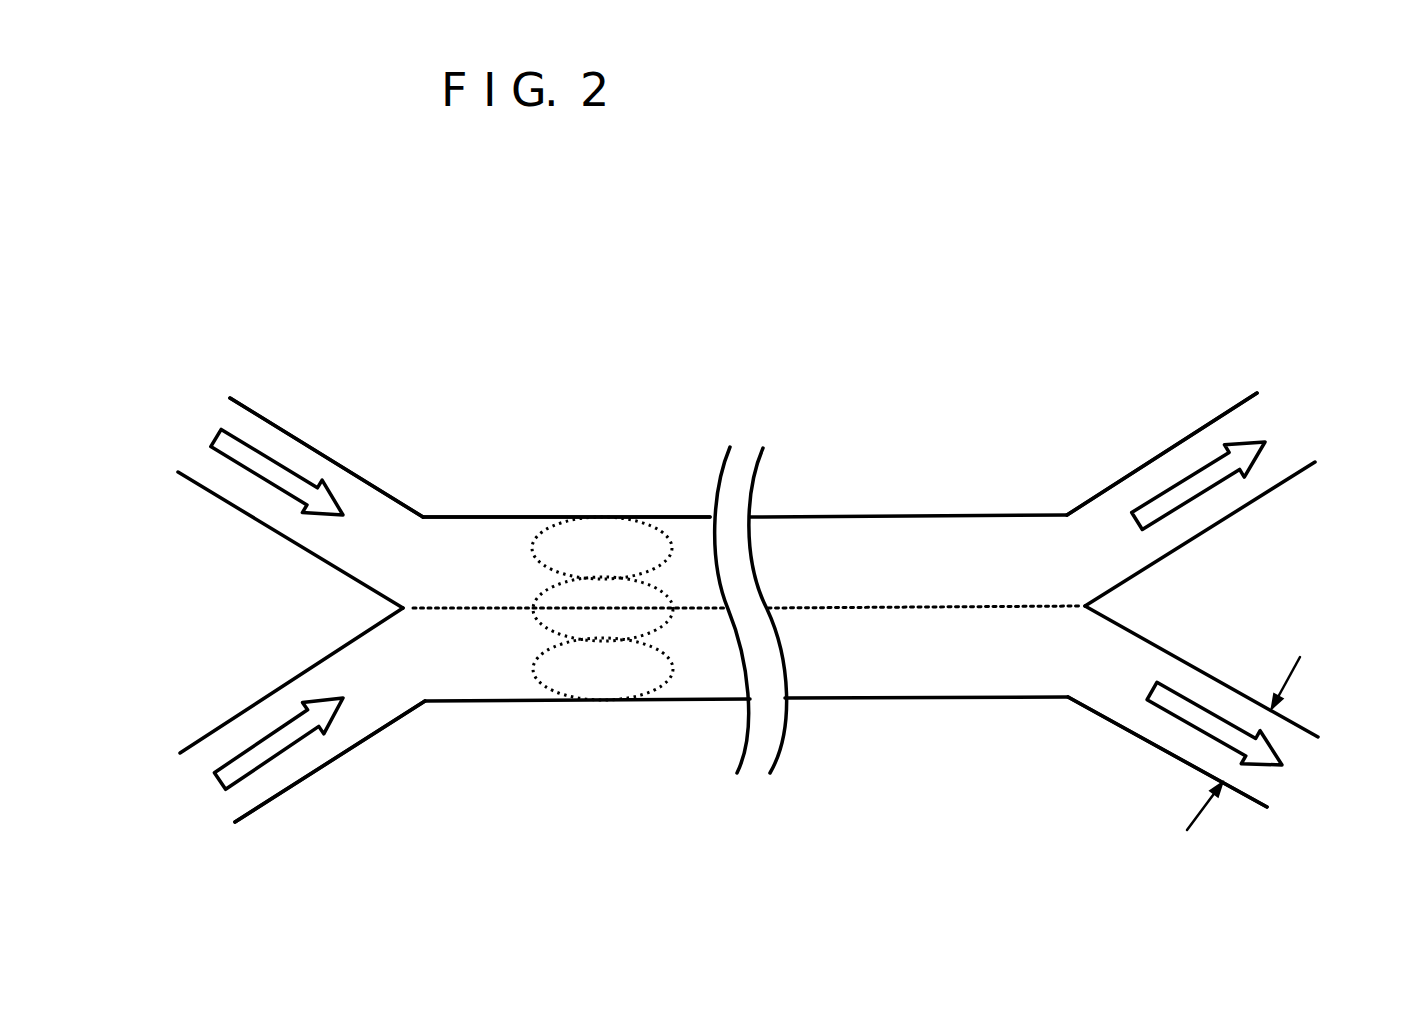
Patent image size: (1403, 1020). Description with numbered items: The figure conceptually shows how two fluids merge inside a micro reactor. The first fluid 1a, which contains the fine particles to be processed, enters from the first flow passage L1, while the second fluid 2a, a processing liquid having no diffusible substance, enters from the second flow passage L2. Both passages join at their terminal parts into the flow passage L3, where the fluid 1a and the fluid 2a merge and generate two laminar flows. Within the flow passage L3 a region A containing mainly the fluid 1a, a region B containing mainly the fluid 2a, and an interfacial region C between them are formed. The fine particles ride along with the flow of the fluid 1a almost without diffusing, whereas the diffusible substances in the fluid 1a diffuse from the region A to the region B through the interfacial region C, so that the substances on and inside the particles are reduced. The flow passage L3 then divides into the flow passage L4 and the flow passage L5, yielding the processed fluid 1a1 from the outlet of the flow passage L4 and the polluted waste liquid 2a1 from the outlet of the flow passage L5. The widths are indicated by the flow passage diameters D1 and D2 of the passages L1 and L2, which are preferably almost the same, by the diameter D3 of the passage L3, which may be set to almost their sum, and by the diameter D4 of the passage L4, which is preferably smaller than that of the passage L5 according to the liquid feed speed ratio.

The first fluid 1a is at (280, 503).
The second fluid 2a is at (291, 721).
The first fluid (processed liquid) 1a1 is at (1215, 499).
The second fluid (processing waste liquid) 2a1 is at (1228, 718).
The flow passage diameter of first flow passage D1 is at (200, 560).
The flow passage diameter of second flow passage D2 is at (197, 665).
The flow passage diameter of flow passage L3 D3 is at (970, 787).
The flow passage diameter of flow passage L4 D4 is at (1295, 550).
The first flow passage L1 is at (363, 477).
The second flow passage L2 is at (373, 735).
The flow passage L3 is at (680, 513).
The flow passage L4 is at (1148, 458).
The flow passage L5 is at (1117, 723).
The region A is at (602, 548).
The region B is at (603, 669).
The interfacial region C is at (603, 609).